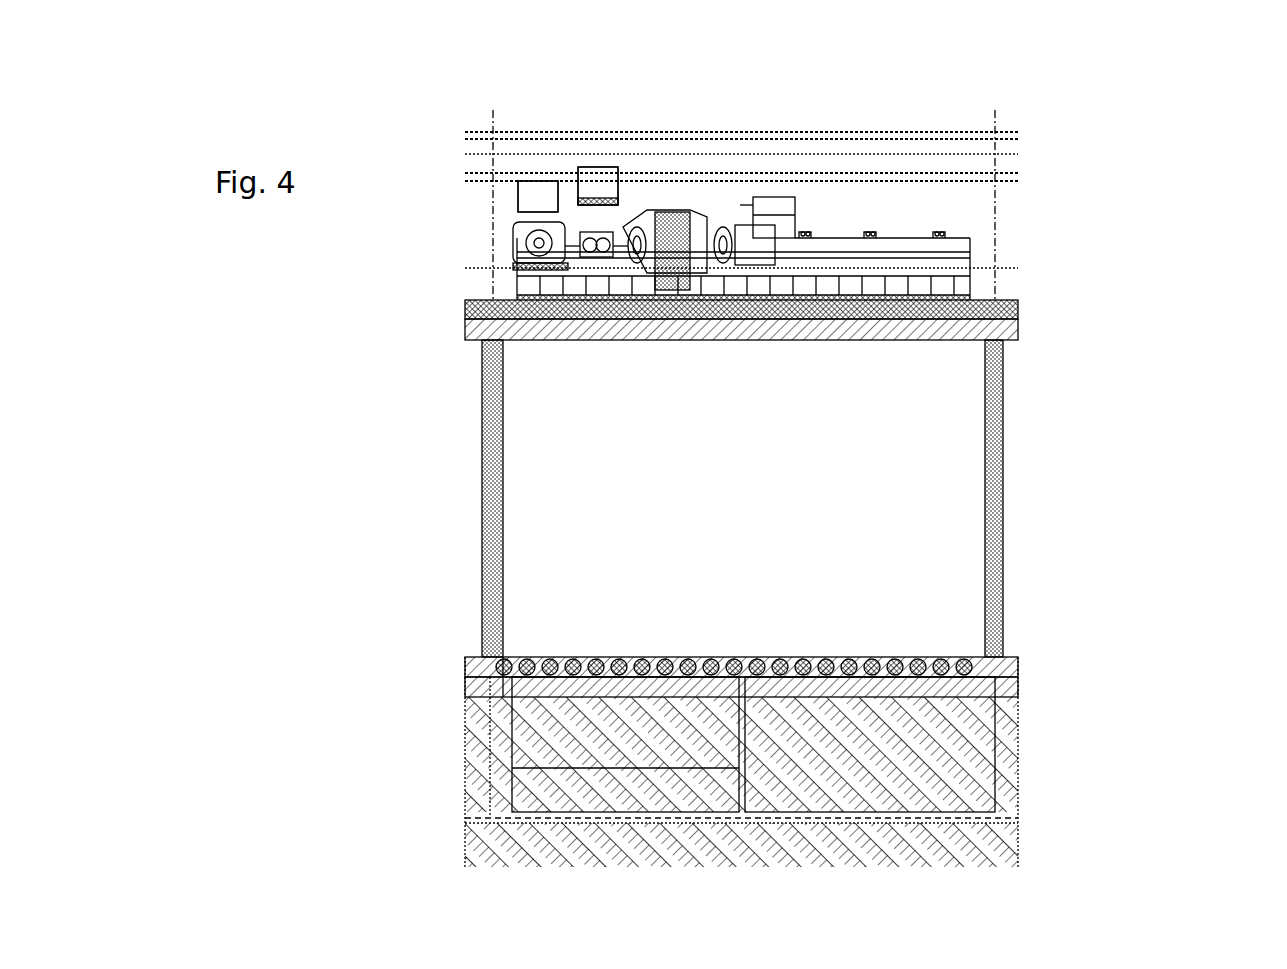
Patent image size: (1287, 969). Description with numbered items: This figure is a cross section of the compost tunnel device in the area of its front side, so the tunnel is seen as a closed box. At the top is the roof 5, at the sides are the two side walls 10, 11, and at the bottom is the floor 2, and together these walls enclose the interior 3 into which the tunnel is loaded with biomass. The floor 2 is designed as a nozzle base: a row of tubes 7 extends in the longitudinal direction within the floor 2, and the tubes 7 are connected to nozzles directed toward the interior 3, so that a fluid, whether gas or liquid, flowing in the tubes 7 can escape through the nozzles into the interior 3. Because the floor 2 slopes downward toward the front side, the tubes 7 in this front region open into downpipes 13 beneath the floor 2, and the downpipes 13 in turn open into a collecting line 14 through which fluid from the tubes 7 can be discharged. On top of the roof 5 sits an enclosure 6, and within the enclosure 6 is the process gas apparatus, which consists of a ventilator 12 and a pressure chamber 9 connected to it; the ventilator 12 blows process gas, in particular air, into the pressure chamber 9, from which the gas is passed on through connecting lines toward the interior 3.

The floor 2 is at (477, 678).
The interior 3 is at (749, 509).
The roof 5 is at (1003, 308).
The enclosure 6 is at (978, 154).
The tubes 7 is at (957, 660).
The pressure chamber 9 is at (845, 238).
The side wall 10 is at (1003, 487).
The side wall 11 is at (486, 440).
The ventilator 12 is at (636, 197).
The downpipes 13 is at (739, 766).
The collecting line 14 is at (878, 818).